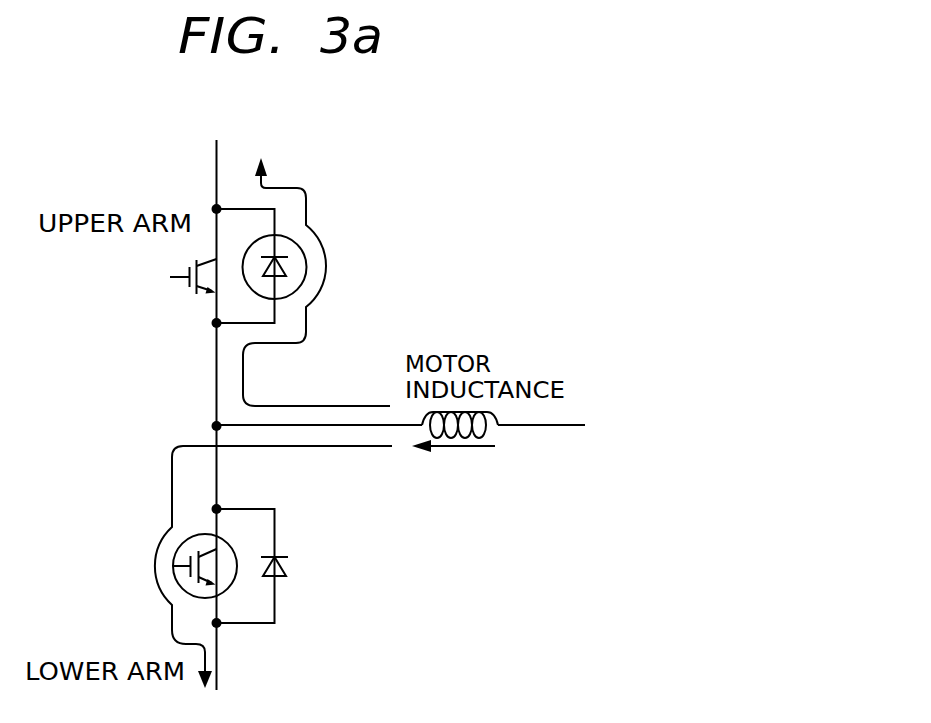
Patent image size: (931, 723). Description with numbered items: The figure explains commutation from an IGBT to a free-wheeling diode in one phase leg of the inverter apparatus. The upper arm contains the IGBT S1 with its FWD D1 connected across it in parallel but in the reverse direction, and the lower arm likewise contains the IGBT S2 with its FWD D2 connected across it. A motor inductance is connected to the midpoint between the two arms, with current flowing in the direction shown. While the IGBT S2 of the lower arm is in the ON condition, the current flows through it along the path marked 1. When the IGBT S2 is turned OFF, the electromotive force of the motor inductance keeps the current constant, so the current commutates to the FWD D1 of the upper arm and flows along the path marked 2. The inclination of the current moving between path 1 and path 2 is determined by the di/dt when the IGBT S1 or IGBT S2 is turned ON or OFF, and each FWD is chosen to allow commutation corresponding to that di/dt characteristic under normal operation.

The IGBT of the upper arm S1 is at (187, 290).
The FWD of the upper arm D1 is at (307, 286).
The IGBT of the lower arm S2 is at (213, 537).
The FWD of the lower arm D2 is at (292, 572).
The current path through lower arm IGBT 1 is at (252, 567).
The current path through upper arm FWD 2 is at (316, 282).